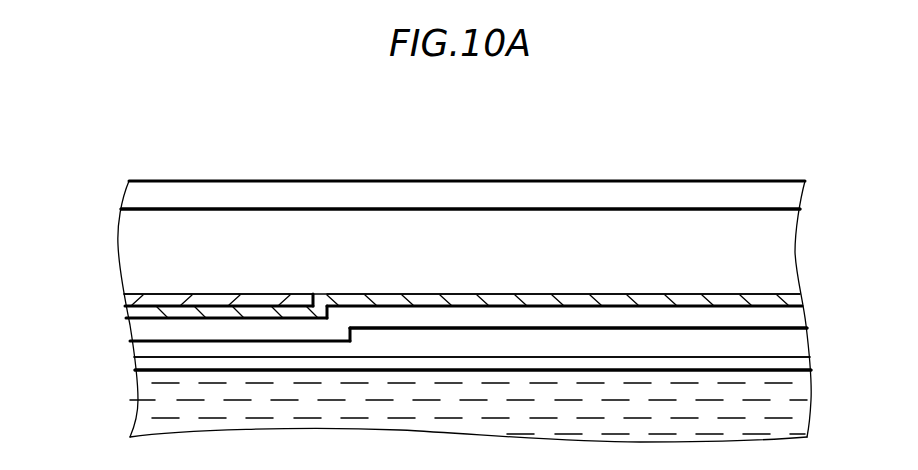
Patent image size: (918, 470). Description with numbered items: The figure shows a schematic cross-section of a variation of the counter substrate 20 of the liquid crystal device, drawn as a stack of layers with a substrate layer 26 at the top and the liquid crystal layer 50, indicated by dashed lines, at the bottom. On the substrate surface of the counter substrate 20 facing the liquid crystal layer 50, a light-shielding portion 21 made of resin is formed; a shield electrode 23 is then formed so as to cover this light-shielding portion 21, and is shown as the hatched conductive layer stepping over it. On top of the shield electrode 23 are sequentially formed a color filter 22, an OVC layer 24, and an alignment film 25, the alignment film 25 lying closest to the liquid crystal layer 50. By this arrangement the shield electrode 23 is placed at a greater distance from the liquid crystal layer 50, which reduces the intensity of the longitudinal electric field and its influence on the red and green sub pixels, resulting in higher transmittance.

The upper substrate 26 is at (783, 198).
The counter substrate 20 is at (780, 250).
The light-shielding portion 21 is at (167, 298).
The shield electrode 23 is at (785, 300).
The color filter 22 is at (790, 318).
The OVC layer 24 is at (793, 343).
The alignment film 25 is at (800, 367).
The liquid crystal layer 50 is at (792, 407).